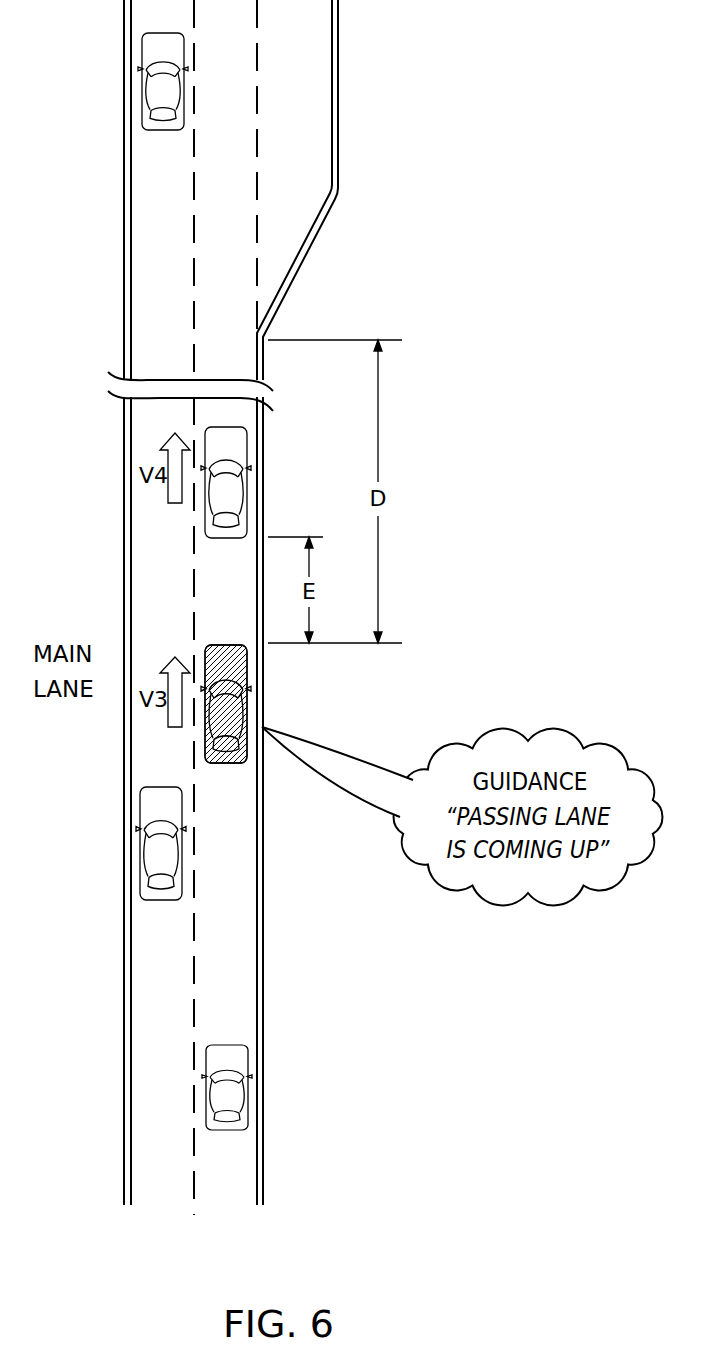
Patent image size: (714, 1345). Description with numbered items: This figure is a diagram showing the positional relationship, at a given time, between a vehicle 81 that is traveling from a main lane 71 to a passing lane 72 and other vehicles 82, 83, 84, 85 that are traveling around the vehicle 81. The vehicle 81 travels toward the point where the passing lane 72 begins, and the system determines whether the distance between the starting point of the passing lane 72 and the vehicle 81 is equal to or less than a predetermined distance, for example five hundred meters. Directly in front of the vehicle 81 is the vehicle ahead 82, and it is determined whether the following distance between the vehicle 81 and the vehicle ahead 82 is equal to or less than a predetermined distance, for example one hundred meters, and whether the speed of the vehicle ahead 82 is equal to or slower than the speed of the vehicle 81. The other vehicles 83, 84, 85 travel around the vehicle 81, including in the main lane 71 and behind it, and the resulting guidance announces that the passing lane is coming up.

The main lane 71 is at (143, 568).
The passing lane 72 is at (320, 170).
The vehicle 81 is at (235, 676).
The vehicle ahead 82 is at (230, 495).
The other vehicle 83 is at (233, 1097).
The other vehicle 84 is at (145, 86).
The other vehicle 85 is at (155, 865).